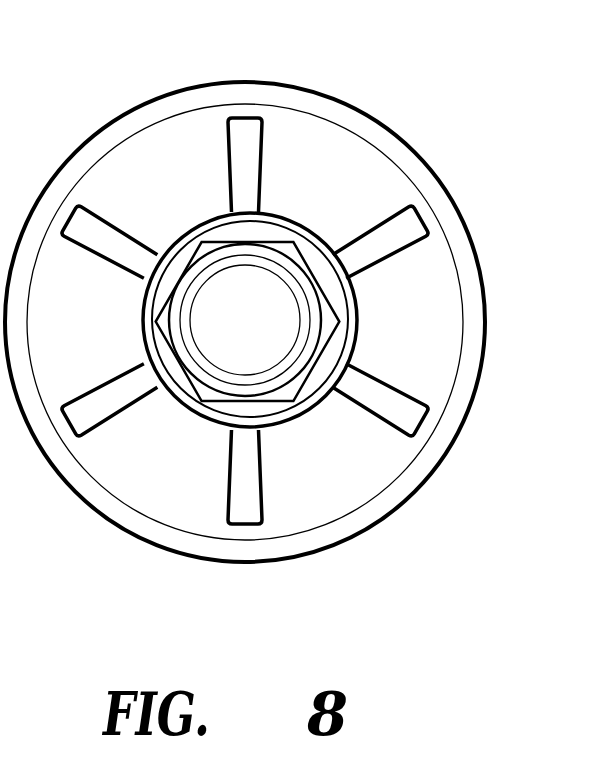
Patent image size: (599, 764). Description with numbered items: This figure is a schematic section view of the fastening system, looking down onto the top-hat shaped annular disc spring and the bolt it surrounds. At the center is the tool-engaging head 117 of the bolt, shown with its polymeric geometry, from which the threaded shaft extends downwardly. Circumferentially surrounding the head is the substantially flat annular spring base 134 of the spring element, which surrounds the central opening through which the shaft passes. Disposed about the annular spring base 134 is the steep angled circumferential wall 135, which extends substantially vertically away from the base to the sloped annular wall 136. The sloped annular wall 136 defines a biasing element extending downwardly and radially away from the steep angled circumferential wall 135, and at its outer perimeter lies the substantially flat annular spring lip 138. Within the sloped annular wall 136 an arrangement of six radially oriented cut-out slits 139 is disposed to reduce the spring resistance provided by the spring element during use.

The tool-engaging head 117 is at (218, 253).
The annular spring base 134 is at (352, 303).
The steep angled circumferential wall 135 is at (358, 340).
The sloped annular wall 136 is at (330, 162).
The annular spring lip 138 is at (418, 172).
The cut-out slits 139 is at (247, 142).